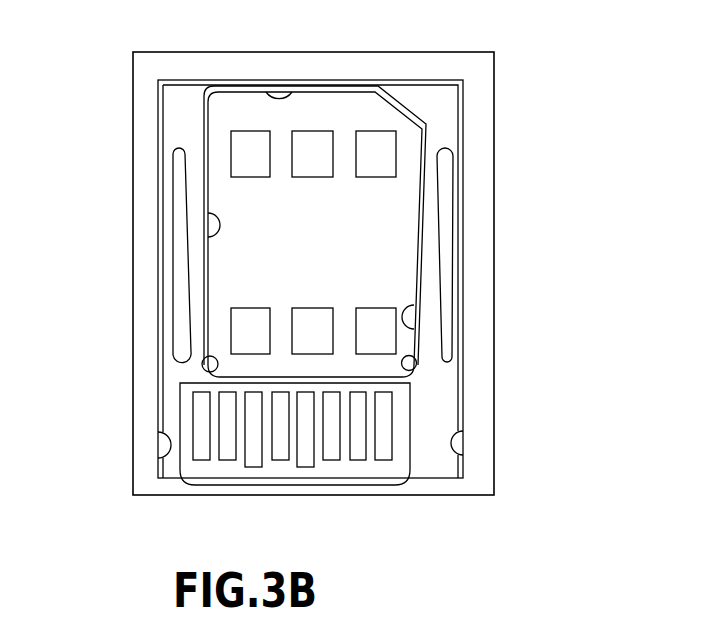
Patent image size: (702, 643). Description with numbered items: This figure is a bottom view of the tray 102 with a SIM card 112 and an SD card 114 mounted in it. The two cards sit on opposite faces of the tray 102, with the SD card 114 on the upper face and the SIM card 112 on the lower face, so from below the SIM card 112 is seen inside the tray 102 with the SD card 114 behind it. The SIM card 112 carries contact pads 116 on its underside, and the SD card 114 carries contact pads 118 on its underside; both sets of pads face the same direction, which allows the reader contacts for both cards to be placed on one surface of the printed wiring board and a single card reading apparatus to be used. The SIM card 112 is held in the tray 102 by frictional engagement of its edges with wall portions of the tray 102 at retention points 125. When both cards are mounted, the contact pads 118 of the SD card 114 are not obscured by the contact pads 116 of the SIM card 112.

The tray 102 is at (462, 363).
The SIM card 112 is at (315, 97).
The SD card 114 is at (403, 418).
The contact pads 116 is at (293, 134).
The contact pads 118 is at (280, 460).
The retention points 125 is at (266, 92).